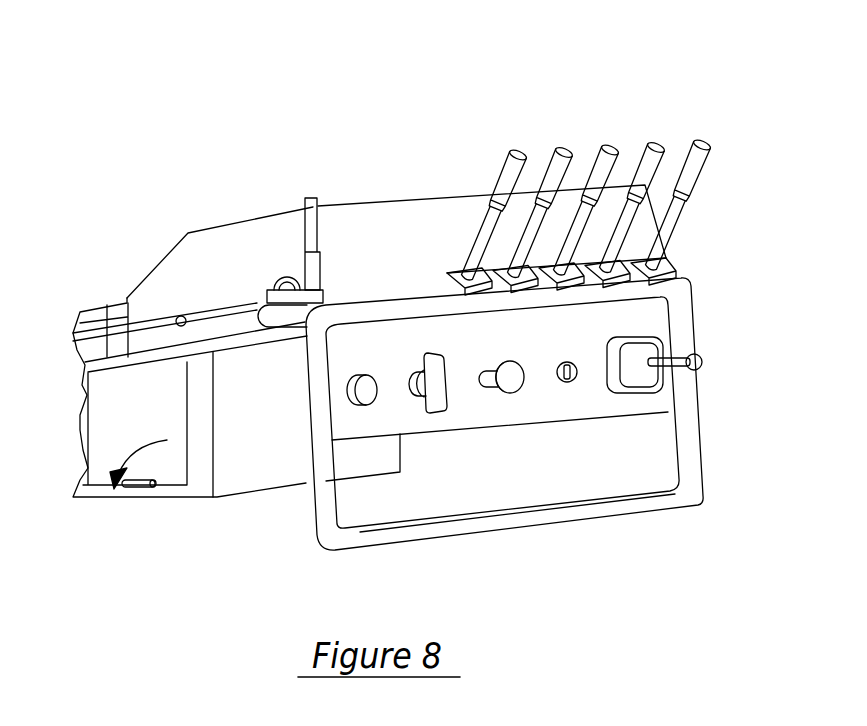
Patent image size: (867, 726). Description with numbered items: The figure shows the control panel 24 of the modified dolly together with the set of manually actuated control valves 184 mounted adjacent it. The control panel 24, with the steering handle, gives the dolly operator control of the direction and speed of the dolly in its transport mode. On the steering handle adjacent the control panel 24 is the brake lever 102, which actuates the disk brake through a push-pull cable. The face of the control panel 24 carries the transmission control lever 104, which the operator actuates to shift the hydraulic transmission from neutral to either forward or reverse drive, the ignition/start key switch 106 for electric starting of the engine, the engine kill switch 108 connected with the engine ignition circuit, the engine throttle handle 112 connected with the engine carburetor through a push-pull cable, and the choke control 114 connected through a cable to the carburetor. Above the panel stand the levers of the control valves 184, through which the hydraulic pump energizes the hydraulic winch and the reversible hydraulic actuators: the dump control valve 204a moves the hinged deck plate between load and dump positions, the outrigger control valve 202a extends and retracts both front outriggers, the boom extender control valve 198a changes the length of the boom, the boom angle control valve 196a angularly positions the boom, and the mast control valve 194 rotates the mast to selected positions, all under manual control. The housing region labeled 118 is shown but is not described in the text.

The manually actuated control valves 184 is at (430, 111).
The brake lever 102 is at (290, 188).
The dump control valve 204a is at (522, 148).
The outrigger control valve 202a is at (563, 145).
The boom extender control valve 198a is at (610, 140).
The boom angle control valve 196a is at (660, 137).
The mast control valve 194 is at (710, 168).
The transmission control lever 104 is at (707, 372).
The housing 118 is at (257, 440).
The choke control 114 is at (363, 405).
The engine throttle handle 112 is at (436, 413).
The control panel 24 is at (478, 437).
The engine kill switch 108 is at (510, 393).
The ignition/start key switch 106 is at (567, 382).